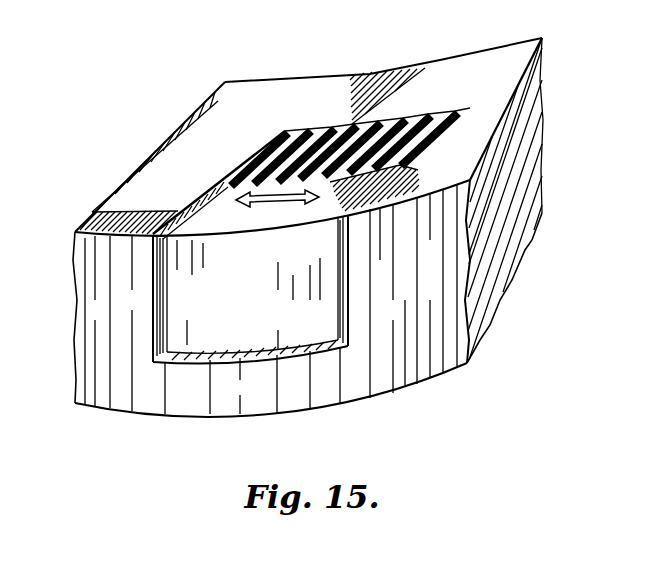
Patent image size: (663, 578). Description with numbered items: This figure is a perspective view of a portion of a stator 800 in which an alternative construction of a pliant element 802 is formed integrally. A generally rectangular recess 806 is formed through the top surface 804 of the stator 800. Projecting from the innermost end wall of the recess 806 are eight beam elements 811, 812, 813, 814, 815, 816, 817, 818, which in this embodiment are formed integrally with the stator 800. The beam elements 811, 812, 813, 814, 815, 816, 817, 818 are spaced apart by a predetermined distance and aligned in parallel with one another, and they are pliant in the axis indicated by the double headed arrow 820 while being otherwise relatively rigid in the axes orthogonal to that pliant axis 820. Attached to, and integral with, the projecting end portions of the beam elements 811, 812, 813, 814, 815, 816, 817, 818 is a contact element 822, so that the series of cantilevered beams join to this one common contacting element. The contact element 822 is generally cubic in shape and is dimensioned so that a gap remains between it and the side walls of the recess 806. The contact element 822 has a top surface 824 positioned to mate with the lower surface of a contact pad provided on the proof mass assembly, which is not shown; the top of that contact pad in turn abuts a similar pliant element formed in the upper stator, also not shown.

The stator 800 is at (496, 308).
The pliant element 802 is at (213, 180).
The top surface 804 is at (462, 174).
The recess 806 is at (340, 291).
The beam element 811 is at (280, 130).
The beam element 812 is at (303, 130).
The beam element 813 is at (327, 129).
The beam element 814 is at (347, 126).
The beam element 815 is at (372, 123).
The beam element 816 is at (398, 120).
The beam element 817 is at (423, 113).
The beam element 818 is at (452, 110).
The double headed arrow 820 is at (300, 226).
The contact element 822 is at (271, 306).
The top surface 824 is at (190, 221).